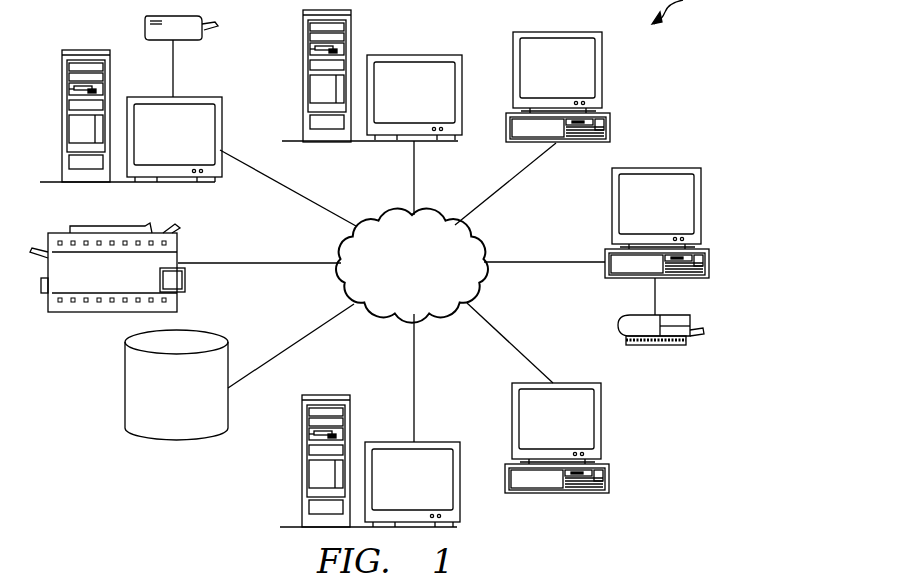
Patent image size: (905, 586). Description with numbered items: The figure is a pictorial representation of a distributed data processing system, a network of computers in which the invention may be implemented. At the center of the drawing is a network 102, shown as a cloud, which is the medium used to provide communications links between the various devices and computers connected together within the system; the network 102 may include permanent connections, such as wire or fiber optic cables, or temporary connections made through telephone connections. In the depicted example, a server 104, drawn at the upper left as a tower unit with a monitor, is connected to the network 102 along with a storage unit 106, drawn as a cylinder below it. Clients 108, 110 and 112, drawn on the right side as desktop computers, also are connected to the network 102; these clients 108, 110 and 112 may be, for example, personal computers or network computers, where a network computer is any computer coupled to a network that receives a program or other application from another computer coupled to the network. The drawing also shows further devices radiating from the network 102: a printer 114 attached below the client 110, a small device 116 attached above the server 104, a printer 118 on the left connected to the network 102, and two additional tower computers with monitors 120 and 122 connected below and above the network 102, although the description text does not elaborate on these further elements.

The network 102 is at (390, 277).
The server 104 is at (153, 146).
The storage unit 106 is at (156, 405).
The client 108 is at (536, 81).
The client 110 is at (633, 216).
The client 112 is at (531, 432).
The printer 114 is at (663, 345).
The pointing device / router 116 is at (146, 25).
The printer 118 is at (84, 284).
The server computer 120 is at (392, 493).
The server computer 122 is at (392, 105).